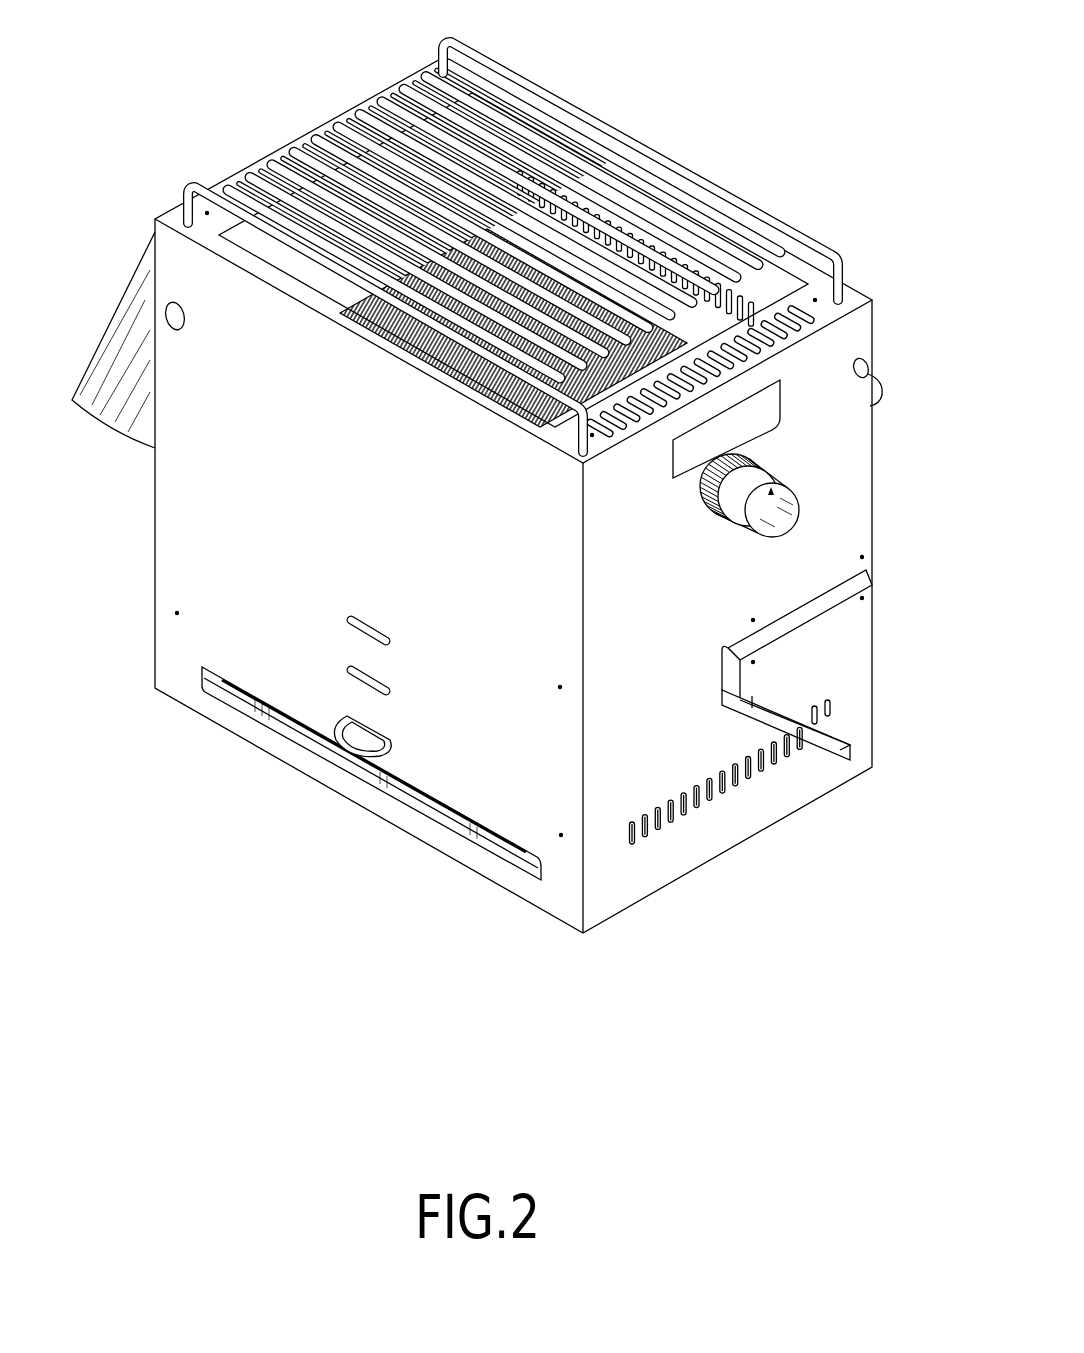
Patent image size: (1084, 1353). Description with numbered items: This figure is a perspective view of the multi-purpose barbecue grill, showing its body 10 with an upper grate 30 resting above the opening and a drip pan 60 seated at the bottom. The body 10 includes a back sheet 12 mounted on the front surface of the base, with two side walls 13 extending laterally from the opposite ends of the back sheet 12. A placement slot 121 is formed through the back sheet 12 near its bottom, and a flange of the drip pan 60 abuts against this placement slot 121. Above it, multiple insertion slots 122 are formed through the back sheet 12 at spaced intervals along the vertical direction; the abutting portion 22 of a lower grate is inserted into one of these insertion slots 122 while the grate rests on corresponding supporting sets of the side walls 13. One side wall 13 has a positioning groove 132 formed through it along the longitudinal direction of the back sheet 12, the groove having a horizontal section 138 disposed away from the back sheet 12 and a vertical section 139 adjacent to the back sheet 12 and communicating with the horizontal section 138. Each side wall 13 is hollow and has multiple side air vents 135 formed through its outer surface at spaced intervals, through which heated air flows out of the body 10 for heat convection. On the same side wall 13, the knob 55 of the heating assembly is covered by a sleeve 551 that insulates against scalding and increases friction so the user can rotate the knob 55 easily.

The body 10 is at (628, 932).
The back sheet 12 is at (158, 538).
The side wall 13 is at (768, 787).
The abutting portion 22 is at (350, 752).
The upper grate 30 is at (703, 140).
The knob 55 is at (813, 484).
The drip pan 60 is at (327, 787).
The placement slot 121 is at (224, 690).
The insertion slot 122 is at (362, 630).
The positioning groove 132 is at (768, 665).
The side air vent 135 is at (697, 807).
The horizontal section 138 is at (790, 617).
The vertical section 139 is at (722, 655).
The sleeve 551 is at (768, 468).